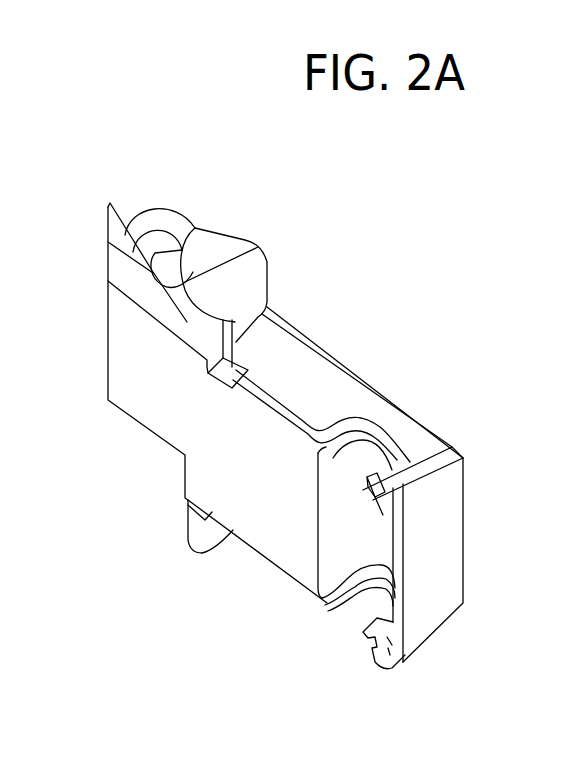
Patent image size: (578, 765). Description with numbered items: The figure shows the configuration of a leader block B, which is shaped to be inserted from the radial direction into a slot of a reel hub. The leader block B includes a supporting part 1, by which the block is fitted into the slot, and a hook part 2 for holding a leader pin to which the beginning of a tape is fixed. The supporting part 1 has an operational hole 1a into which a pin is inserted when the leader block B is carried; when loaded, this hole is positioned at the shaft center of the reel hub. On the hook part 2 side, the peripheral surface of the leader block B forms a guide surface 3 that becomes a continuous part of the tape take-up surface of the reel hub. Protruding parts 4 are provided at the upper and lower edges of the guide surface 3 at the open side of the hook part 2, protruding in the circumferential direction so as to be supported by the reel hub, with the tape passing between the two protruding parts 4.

The supporting part 1 is at (285, 340).
The operational hole 1a is at (160, 240).
The hook part 2 is at (407, 413).
The guide surface 3 is at (440, 530).
The protruding parts 4 is at (367, 510).
The leader block B is at (355, 351).